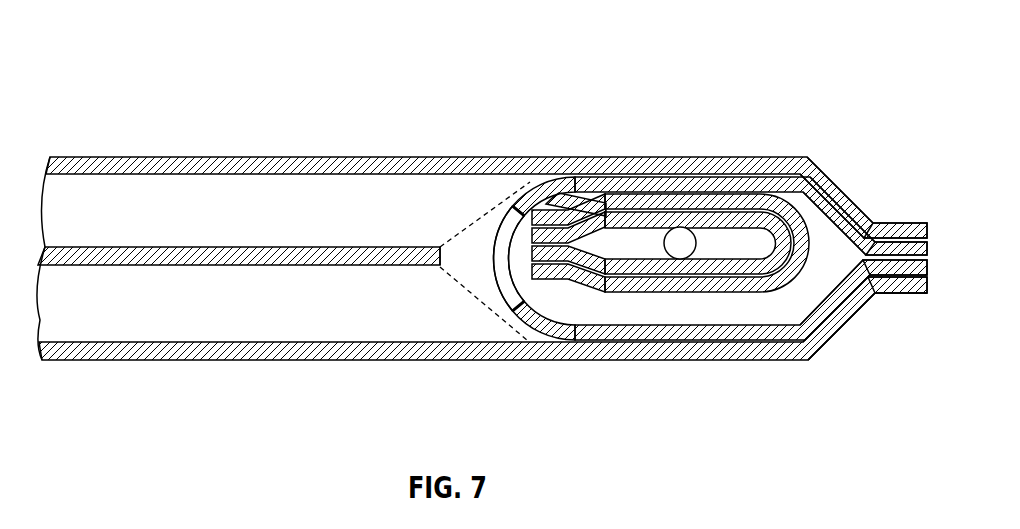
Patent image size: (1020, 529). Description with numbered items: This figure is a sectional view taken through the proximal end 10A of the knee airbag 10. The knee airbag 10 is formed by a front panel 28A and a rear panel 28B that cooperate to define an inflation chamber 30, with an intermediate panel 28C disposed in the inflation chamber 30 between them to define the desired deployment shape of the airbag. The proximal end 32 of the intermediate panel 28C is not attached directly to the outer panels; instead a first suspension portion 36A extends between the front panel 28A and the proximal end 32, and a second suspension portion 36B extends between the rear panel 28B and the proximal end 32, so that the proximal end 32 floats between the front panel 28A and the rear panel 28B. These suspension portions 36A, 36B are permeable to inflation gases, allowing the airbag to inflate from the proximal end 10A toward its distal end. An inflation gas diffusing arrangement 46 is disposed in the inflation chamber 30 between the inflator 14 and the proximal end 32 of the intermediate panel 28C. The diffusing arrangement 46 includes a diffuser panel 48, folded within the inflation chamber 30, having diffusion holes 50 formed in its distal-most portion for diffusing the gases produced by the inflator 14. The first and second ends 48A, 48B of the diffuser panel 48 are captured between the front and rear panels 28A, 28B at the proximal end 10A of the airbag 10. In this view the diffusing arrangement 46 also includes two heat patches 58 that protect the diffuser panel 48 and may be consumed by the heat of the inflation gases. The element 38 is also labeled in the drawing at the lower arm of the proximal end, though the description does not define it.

The knee airbag 10 is at (495, 225).
The proximal end of the airbag 10A is at (880, 222).
The inflator 14 is at (697, 242).
The front panel 28A is at (385, 157).
The rear panel 28B is at (308, 360).
The intermediate panel 28C is at (360, 247).
The inflation chamber 30 is at (247, 204).
The proximal end of the intermediate panel 32 is at (430, 266).
The first suspension portion 36A is at (487, 208).
The second suspension portion 36B is at (490, 313).
The lower arm 38 is at (873, 295).
The inflation gas diffusing arrangement 46 is at (540, 178).
The diffuser panel 48 is at (636, 330).
The first end of the diffuser panel 48A is at (893, 249).
The second end of the diffuser panel 48B is at (917, 267).
The diffusion holes 50 is at (514, 292).
The heat patches 58 is at (700, 290).